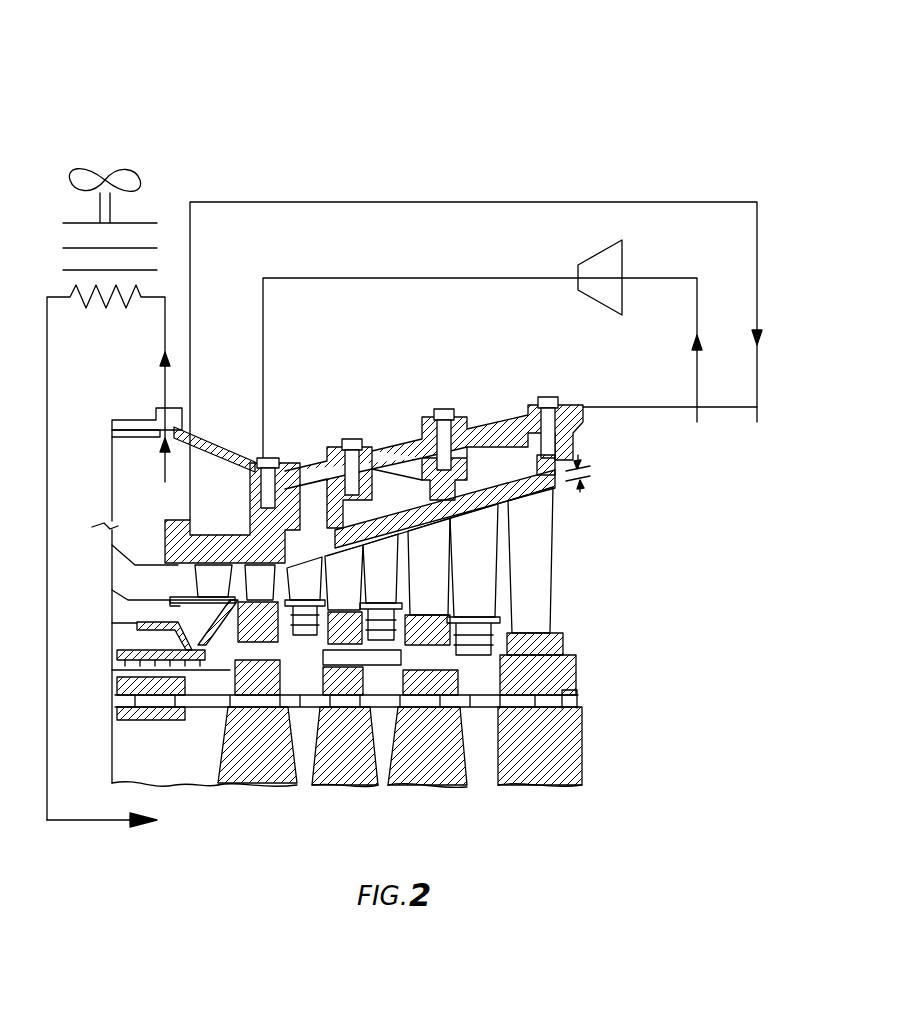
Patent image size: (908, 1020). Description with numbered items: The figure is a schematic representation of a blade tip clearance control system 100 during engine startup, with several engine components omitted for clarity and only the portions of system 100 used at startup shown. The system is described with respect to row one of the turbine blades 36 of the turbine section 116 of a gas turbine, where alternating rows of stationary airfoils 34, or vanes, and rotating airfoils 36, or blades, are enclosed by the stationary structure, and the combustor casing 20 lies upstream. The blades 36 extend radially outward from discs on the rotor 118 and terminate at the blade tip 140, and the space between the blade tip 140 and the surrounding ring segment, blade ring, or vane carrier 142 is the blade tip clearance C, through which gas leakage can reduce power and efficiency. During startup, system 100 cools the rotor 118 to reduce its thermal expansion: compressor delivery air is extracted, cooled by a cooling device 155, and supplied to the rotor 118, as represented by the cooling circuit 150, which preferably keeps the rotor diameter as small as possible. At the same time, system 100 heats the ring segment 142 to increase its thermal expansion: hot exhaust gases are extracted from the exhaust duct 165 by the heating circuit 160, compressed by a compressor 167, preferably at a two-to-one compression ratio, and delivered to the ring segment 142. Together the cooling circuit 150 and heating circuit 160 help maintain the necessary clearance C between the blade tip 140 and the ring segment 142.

The clearance control system 100 is at (623, 97).
The turbine section 116 is at (397, 334).
The rotor 118 is at (218, 762).
The casing 20 is at (221, 429).
The stationary airfoils 34 is at (222, 594).
The rotating airfoils 36 is at (272, 602).
The blade tip 140 is at (335, 545).
The ring segment 142 is at (226, 531).
The cooling circuit 150 is at (167, 311).
The cooling device 155 is at (147, 143).
The heating circuit 160 is at (681, 200).
The exhaust duct 165 is at (771, 441).
The compressor 167 is at (603, 306).
The blade tip clearance C is at (588, 473).